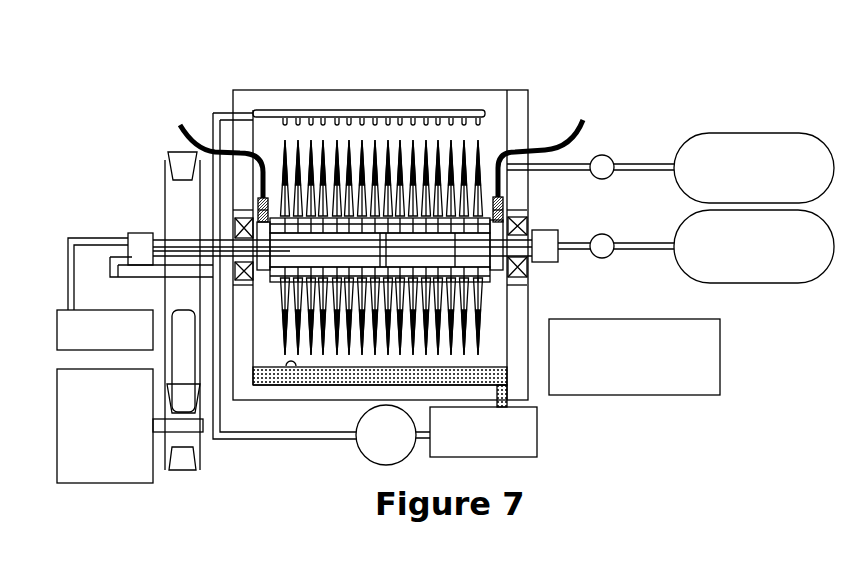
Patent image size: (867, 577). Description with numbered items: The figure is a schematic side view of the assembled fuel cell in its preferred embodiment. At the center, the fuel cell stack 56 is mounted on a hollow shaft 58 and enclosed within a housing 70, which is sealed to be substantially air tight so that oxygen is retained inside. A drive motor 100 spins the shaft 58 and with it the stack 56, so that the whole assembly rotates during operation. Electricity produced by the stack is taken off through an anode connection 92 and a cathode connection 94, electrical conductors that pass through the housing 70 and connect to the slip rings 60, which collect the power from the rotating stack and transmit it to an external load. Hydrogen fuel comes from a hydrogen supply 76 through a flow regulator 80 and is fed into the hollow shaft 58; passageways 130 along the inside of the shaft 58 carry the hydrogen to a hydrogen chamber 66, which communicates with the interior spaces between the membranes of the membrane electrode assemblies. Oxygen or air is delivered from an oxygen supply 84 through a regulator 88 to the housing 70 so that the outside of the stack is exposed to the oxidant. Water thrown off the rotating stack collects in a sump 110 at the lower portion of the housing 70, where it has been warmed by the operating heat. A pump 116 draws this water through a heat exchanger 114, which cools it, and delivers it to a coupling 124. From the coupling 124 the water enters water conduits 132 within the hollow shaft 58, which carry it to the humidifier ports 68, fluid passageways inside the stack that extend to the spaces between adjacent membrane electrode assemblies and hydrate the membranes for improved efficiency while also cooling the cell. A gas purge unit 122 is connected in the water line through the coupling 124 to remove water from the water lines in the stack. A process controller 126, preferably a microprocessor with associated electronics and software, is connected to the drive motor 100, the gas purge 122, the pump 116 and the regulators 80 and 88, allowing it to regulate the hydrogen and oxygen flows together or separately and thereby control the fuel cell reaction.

The fuel cell stack 56 is at (487, 128).
The hollow shaft 58 is at (160, 245).
The slip rings 60 is at (280, 227).
The hydrogen chamber 66 is at (503, 217).
The humidifier ports 68 is at (323, 200).
The housing 70 is at (437, 91).
The hydrogen supply 76 is at (778, 283).
The flow regulator 80 is at (606, 256).
The oxygen supply 84 is at (789, 132).
The regulator 88 is at (608, 158).
The anode connection 92 is at (583, 117).
The cathode connection 94 is at (192, 125).
The drive motor 100 is at (82, 472).
The sump 110 is at (291, 364).
The heat exchanger 114 is at (530, 458).
The pump 116 is at (377, 453).
The gas purge unit 122 is at (57, 335).
The coupling 124 is at (133, 240).
The process controller 126 is at (683, 397).
The passageways 130 is at (515, 245).
The water conduits 132 is at (210, 248).